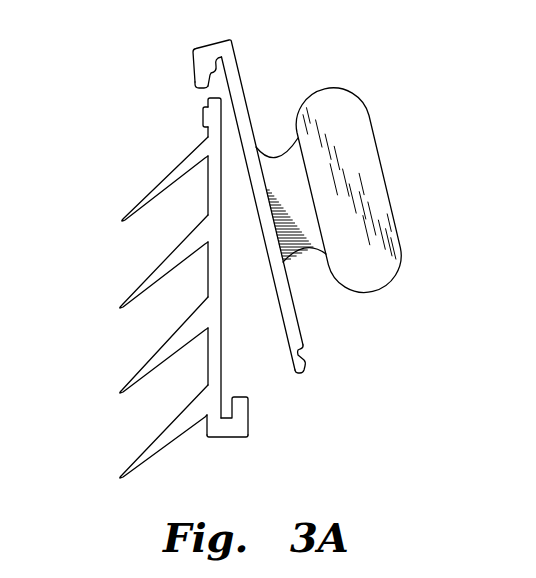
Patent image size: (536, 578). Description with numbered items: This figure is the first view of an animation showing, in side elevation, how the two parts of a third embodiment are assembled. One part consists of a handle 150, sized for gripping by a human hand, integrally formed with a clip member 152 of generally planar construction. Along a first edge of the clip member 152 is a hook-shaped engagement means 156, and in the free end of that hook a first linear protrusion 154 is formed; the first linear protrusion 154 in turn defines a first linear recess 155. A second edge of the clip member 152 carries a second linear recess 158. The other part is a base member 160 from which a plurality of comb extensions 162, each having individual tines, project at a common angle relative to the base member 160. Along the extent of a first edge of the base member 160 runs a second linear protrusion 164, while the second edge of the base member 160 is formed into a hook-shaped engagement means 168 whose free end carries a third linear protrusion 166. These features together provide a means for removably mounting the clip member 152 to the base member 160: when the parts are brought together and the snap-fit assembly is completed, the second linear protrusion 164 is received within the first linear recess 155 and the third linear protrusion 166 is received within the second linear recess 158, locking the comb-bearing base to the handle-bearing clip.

The handle 150 is at (383, 167).
The clip member 152 is at (243, 78).
The first linear protrusion 154 is at (198, 88).
The first linear recess 155 is at (193, 58).
The hook-shaped engagement means 156 is at (196, 48).
The second linear recess 158 is at (299, 350).
The base member 160 is at (217, 282).
The comb extensions 162 is at (138, 202).
The second linear protrusion 164 is at (203, 110).
The third linear protrusion 166 is at (240, 384).
The hook-shaped engagement means 168 is at (236, 438).